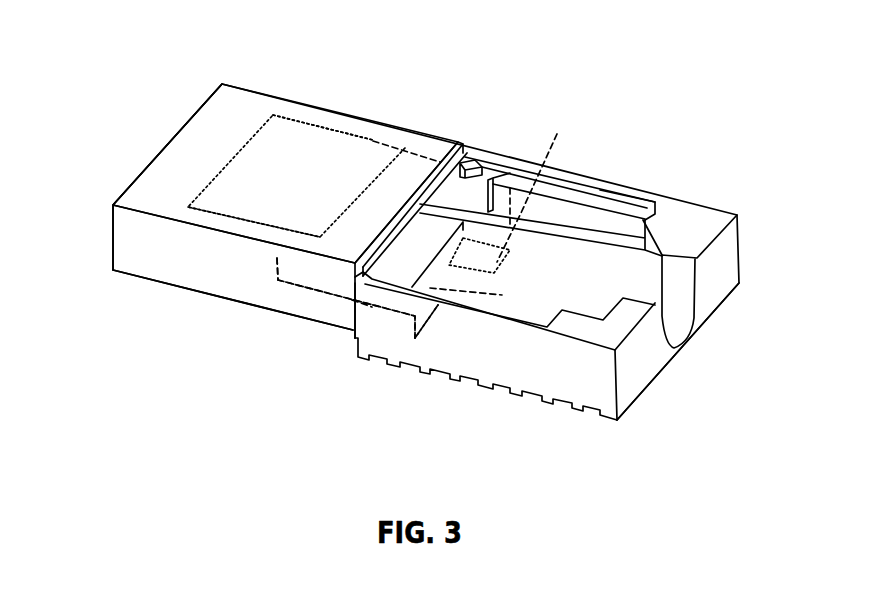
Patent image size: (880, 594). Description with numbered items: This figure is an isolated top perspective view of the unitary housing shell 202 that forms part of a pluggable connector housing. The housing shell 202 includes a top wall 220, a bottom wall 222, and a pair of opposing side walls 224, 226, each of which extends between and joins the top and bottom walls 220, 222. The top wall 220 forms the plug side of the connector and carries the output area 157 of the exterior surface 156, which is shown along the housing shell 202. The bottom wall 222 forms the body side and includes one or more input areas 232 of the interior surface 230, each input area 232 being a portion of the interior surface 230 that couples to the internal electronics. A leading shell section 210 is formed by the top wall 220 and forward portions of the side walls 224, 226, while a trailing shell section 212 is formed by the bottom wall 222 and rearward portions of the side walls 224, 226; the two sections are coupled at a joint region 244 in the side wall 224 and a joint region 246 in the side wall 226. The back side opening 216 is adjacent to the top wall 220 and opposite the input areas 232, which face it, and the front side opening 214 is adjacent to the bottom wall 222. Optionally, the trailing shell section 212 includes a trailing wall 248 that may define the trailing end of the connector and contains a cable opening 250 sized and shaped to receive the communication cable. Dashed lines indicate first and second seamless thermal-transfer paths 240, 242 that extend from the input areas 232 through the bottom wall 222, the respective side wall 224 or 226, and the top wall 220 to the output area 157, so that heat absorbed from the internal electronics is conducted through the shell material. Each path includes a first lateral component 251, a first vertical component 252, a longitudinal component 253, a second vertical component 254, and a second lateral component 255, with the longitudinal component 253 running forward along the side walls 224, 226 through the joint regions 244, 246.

The housing shell 202 is at (165, 58).
The leading shell section 210 is at (318, 72).
The trailing shell section 212 is at (529, 425).
The front side opening 214 is at (156, 296).
The back side opening 216 is at (622, 205).
The top wall 220 is at (291, 148).
The bottom wall 222 is at (562, 308).
The side wall 224 is at (314, 310).
The side wall 226 is at (507, 165).
The interior surface 230 is at (630, 294).
The input area 232 is at (506, 207).
The first seamless thermal-transfer path 240 is at (296, 287).
The second seamless thermal-transfer path 242 is at (429, 154).
The joint region 244 is at (349, 280).
The joint region 246 is at (460, 196).
The trailing wall 248 is at (638, 364).
The cable opening 250 is at (678, 283).
The first lateral component 251 is at (456, 308).
The first vertical component 252 is at (417, 318).
The longitudinal component 253 is at (352, 305).
The second vertical component 254 is at (277, 260).
The second lateral component 255 is at (300, 211).
The exterior surface 156 is at (232, 156).
The output area 157 is at (355, 152).